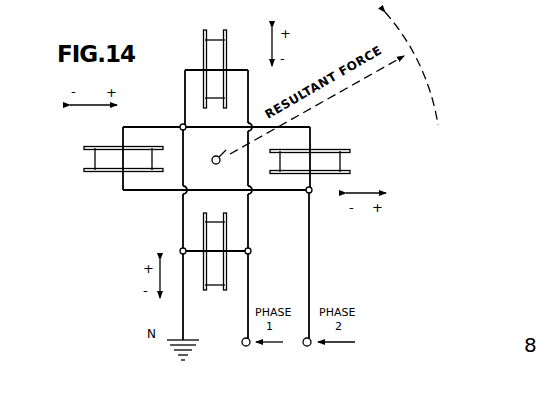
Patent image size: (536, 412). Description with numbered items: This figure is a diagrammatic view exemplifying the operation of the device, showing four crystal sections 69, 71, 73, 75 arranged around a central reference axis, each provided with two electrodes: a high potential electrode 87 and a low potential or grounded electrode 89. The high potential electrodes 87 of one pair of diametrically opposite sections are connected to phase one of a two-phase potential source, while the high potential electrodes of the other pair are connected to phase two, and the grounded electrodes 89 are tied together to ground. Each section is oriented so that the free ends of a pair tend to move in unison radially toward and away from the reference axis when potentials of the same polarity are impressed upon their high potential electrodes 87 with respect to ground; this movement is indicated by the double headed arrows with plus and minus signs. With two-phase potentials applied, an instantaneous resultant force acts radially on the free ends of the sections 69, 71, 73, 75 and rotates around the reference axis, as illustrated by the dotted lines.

The top electromagnet coil 69 is at (215, 48).
The right electromagnet coil 71 is at (336, 160).
The bottom electromagnet coil 73 is at (228, 290).
The left electromagnet coil 75 is at (100, 160).
The high potential electrode 87 is at (228, 68).
The low potential electrode 89 is at (204, 63).